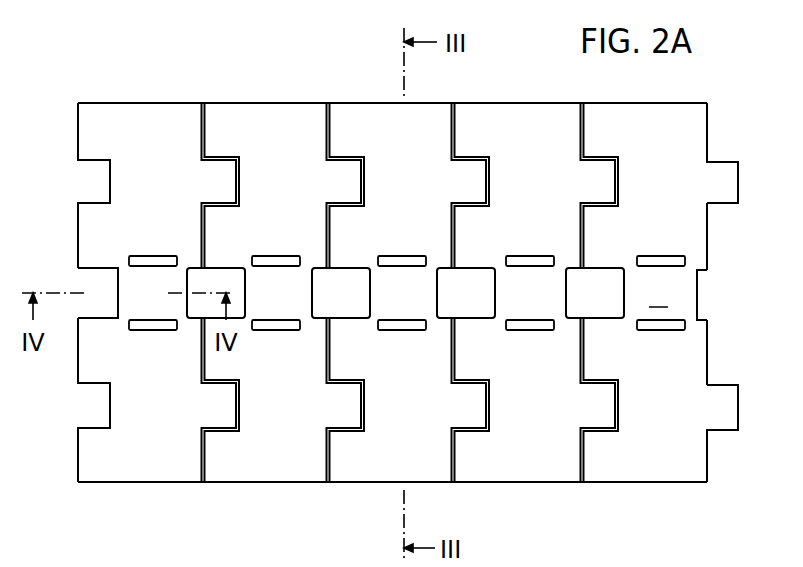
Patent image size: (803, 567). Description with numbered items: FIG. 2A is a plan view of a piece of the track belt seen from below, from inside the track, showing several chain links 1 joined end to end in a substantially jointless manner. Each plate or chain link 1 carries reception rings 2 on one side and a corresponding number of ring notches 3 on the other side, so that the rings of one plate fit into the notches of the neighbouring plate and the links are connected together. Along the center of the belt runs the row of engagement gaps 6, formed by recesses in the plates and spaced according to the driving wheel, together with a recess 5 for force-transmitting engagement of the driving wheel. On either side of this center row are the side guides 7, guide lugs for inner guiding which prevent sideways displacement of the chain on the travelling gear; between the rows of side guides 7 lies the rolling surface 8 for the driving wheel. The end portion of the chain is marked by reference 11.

The chain link 1 is at (112, 103).
The reception ring 2 is at (222, 182).
The ring notch 3 is at (97, 178).
The recess 5 is at (697, 294).
The engagement gap 6 is at (348, 268).
The side guide 7 is at (276, 257).
The rolling surface 8 is at (658, 295).
The end module side portion 11 is at (672, 236).